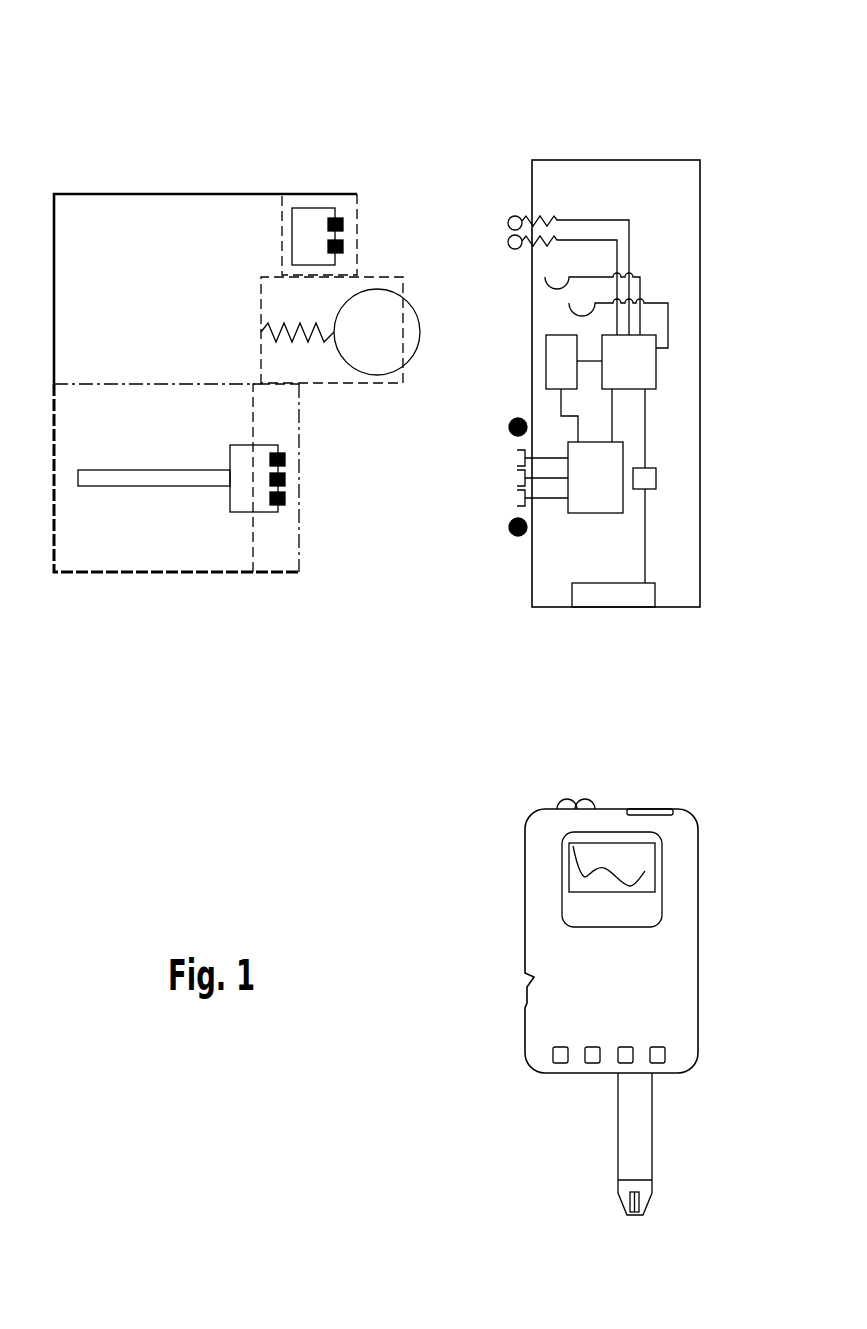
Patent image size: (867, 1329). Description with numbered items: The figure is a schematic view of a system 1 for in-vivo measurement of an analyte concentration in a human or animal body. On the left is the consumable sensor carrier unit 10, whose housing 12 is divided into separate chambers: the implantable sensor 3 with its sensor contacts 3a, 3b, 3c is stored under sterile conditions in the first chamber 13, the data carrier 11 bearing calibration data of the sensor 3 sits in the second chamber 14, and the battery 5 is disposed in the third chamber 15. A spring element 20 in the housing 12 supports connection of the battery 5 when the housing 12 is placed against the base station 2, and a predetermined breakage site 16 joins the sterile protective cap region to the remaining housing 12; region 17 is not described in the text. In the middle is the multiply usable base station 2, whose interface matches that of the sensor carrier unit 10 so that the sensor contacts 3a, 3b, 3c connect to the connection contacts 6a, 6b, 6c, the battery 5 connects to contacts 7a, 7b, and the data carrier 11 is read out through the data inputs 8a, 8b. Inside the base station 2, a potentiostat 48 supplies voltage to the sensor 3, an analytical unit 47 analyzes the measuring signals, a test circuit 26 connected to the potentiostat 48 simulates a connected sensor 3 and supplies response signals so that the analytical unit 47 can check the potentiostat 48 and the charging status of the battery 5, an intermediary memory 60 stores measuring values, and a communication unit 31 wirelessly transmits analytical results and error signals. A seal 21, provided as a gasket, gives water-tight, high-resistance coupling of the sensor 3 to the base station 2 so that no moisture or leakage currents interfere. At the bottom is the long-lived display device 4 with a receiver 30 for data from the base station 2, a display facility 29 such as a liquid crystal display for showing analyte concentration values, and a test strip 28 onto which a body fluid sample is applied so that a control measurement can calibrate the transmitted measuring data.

The system 1 is at (593, 116).
The base station 2 is at (700, 430).
The sensor 3 is at (147, 477).
The sensor contact 3a is at (285, 459).
The sensor contact 3b is at (285, 479).
The sensor contact 3c is at (285, 498).
The display device 4 is at (498, 853).
The battery 5 is at (395, 338).
The connection contact 6a is at (518, 458).
The connection contact 6b is at (518, 478).
The connection contact 6c is at (518, 498).
The connection contact 7a is at (668, 303).
The connection contact 7b is at (640, 277).
The data input 8a is at (508, 242).
The data input 8b is at (508, 223).
The sensor carrier unit 10 is at (185, 614).
The data carrier 11 is at (313, 213).
The housing 12 is at (100, 194).
The first chamber 13 is at (97, 545).
The second chamber 14 is at (287, 223).
The third chamber 15 is at (273, 287).
The predetermined breakage site 16 is at (253, 535).
The connection region 17 is at (283, 413).
The spring element 20 is at (272, 312).
The seal 21 is at (516, 537).
The test circuit 26 is at (546, 377).
The test strip 28 is at (629, 1147).
The display facility 29 is at (645, 912).
The receiver 30 is at (649, 809).
The communication unit 31 is at (609, 595).
The analytical unit 47 is at (642, 372).
The potentiostat 48 is at (580, 500).
The intermediary memory 60 is at (645, 478).